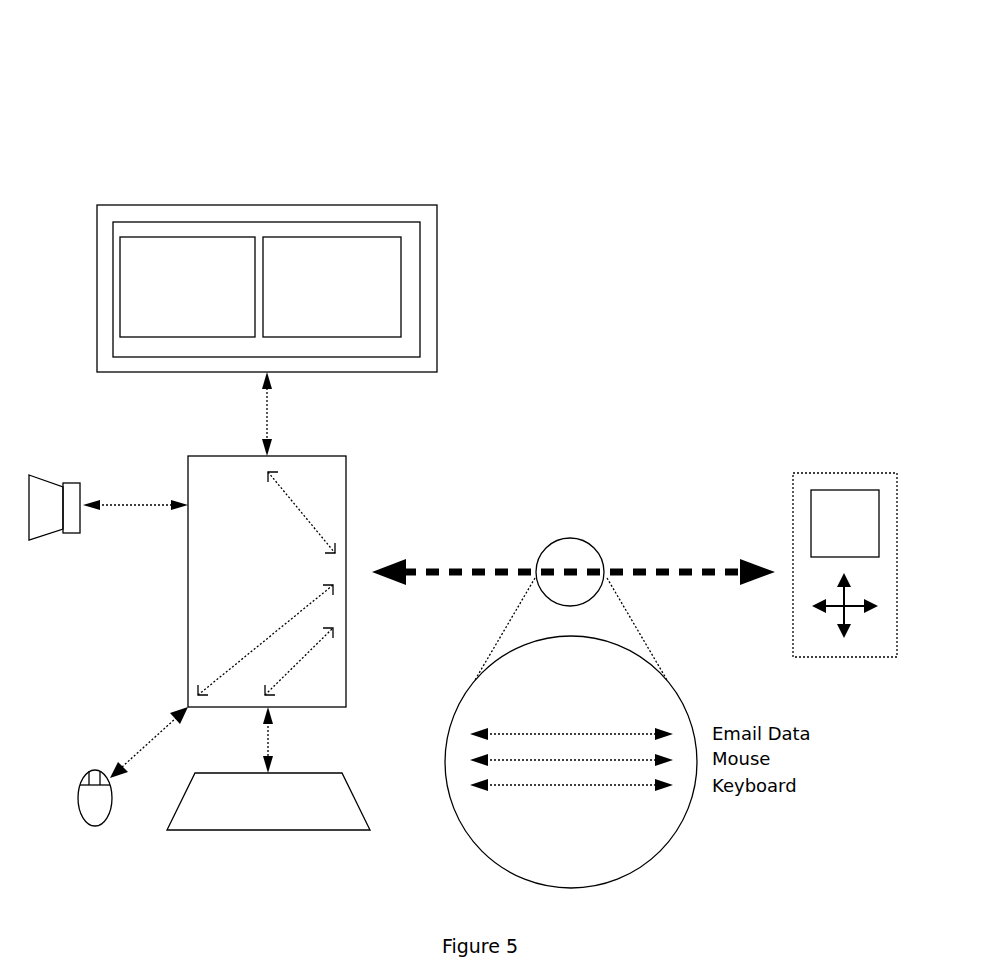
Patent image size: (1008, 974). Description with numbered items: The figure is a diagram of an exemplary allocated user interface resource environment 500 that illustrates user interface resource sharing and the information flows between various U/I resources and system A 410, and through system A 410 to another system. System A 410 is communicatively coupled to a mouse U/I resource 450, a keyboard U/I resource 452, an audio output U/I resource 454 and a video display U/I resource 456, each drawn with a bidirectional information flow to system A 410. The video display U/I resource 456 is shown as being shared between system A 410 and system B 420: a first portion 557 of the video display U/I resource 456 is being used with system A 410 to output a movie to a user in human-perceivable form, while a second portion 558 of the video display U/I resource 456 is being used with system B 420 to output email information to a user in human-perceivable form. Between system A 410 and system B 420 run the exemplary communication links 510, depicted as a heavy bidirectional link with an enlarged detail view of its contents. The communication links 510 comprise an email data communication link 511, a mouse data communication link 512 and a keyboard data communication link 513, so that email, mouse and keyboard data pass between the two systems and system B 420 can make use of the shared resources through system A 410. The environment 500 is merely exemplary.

The allocated U/I resource environment 500 is at (150, 88).
The video display U/I resource 456 is at (437, 232).
The first portion 557 is at (237, 237).
The second portion 558 is at (377, 237).
The system A 410 is at (346, 462).
The audio output U/I resource 454 is at (71, 535).
The mouse U/I resource 450 is at (95, 825).
The keyboard U/I resource 452 is at (250, 830).
The communication links 510 is at (610, 565).
The email data communication link 511 is at (570, 732).
The mouse data communication link 512 is at (503, 760).
The keyboard data communication link 513 is at (580, 790).
The system B 420 is at (797, 497).